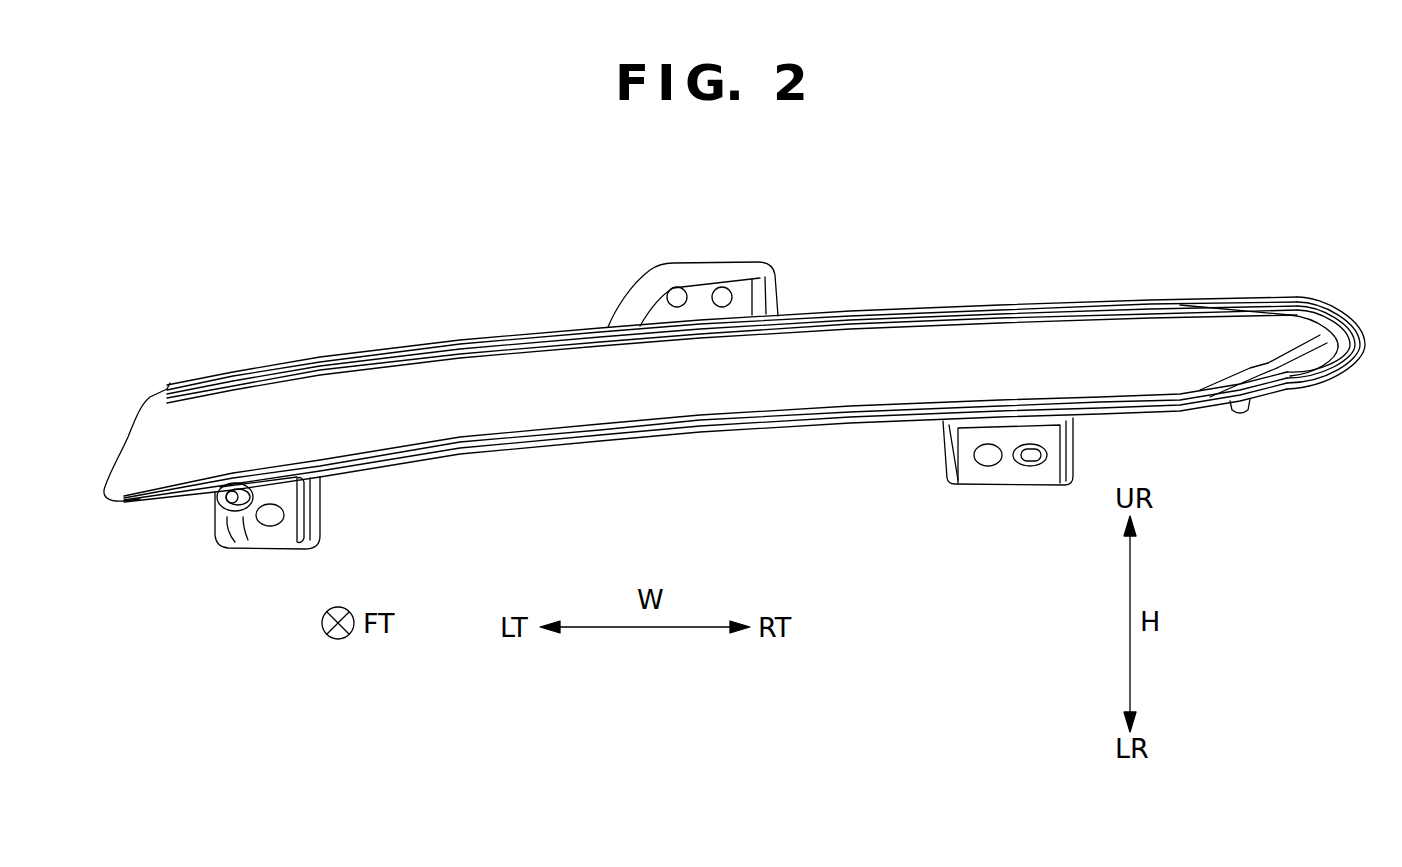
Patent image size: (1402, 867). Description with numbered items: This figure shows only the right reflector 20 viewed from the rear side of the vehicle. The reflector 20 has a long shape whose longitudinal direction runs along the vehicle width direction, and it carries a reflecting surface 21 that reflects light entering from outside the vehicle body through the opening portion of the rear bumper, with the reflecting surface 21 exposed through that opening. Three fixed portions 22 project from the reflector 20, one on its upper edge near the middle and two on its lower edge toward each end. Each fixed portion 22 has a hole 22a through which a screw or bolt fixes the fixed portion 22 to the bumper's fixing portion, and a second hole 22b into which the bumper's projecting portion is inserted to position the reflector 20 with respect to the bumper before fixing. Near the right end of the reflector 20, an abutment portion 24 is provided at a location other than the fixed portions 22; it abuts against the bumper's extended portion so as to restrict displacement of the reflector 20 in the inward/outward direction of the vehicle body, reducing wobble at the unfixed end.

The reflector 20 is at (230, 296).
The reflecting surface 21 is at (420, 375).
The fixed portion 22 is at (307, 517).
The hole 22a is at (272, 518).
The hole 22b is at (234, 499).
The abutment portion 24 is at (1243, 418).